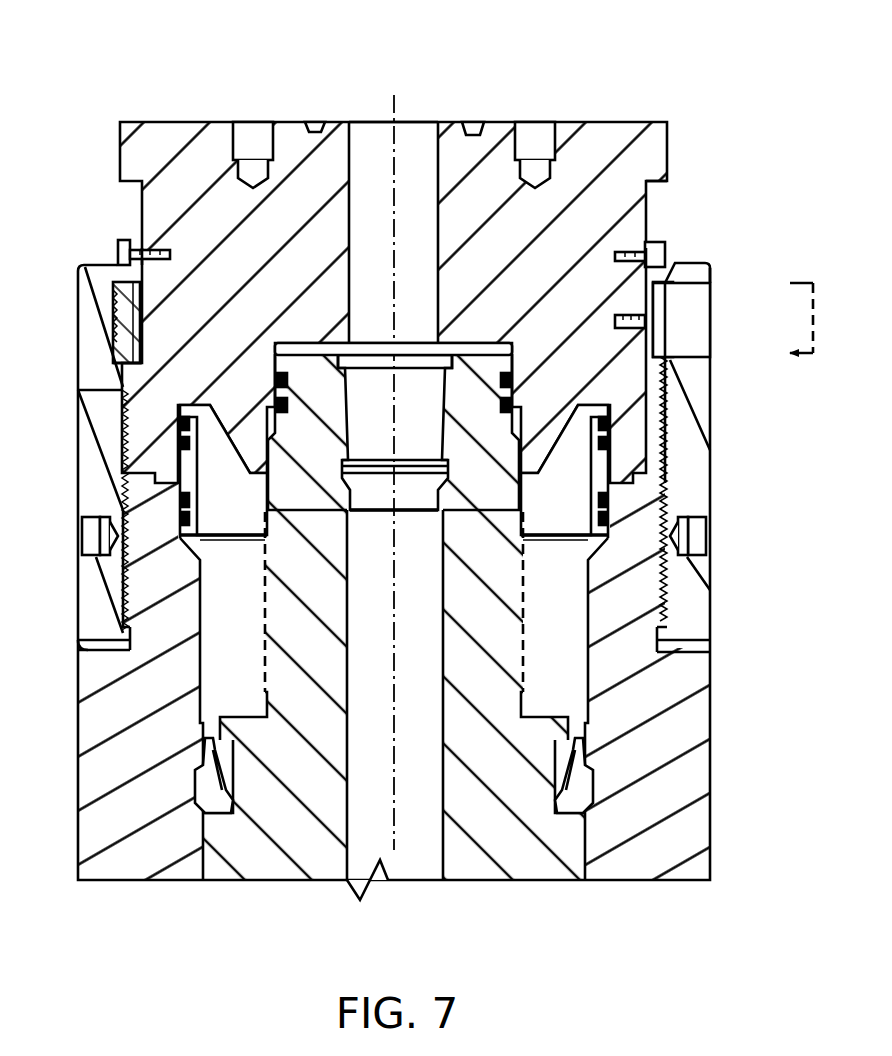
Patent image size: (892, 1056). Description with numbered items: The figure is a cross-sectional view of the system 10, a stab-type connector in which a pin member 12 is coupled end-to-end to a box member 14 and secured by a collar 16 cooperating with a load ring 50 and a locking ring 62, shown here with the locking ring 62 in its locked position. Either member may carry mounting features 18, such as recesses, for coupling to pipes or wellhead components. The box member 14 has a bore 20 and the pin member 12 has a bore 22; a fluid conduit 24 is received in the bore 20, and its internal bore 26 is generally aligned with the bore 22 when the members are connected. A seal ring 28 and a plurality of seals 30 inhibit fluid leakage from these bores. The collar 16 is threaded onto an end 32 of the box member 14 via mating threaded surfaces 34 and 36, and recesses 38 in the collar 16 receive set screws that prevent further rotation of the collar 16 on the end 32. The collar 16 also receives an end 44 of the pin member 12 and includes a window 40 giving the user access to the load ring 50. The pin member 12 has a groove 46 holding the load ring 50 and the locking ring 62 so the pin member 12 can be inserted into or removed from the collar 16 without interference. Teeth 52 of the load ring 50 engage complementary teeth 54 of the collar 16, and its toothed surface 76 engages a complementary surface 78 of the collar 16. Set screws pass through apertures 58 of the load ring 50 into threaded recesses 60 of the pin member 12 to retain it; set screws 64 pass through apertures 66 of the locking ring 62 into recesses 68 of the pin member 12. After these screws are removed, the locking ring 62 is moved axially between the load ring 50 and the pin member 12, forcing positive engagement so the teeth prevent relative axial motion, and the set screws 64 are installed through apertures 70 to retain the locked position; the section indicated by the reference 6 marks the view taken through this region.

The section line 6 is at (797, 320).
The system 10 is at (99, 58).
The pin member 12 is at (135, 158).
The box member 14 is at (100, 778).
The collar 16 is at (93, 465).
The mounting features 18 is at (555, 132).
The bore 20 is at (203, 616).
The bore 22 is at (350, 142).
The fluid conduit 24 is at (270, 866).
The internal bore 26 is at (440, 846).
The seal ring 28 is at (190, 486).
The seals 30 is at (278, 405).
The end 32 is at (135, 606).
The threaded surface 34 is at (132, 592).
The threaded surface 36 is at (160, 620).
The recesses 38 is at (92, 548).
The window 40 is at (708, 286).
The end 44 is at (647, 428).
The groove 46 is at (645, 205).
The load ring 50 is at (118, 348).
The teeth 52 is at (672, 318).
The teeth 54 is at (650, 345).
The apertures 58 is at (660, 273).
The threaded recesses 60 is at (640, 316).
The locking ring 62 is at (140, 250).
The set screws 64 is at (120, 275).
The apertures 66 is at (123, 315).
The recesses 68 is at (152, 248).
The apertures 70 is at (125, 257).
The toothed surface 76 is at (688, 290).
The complementary surface 78 is at (665, 380).